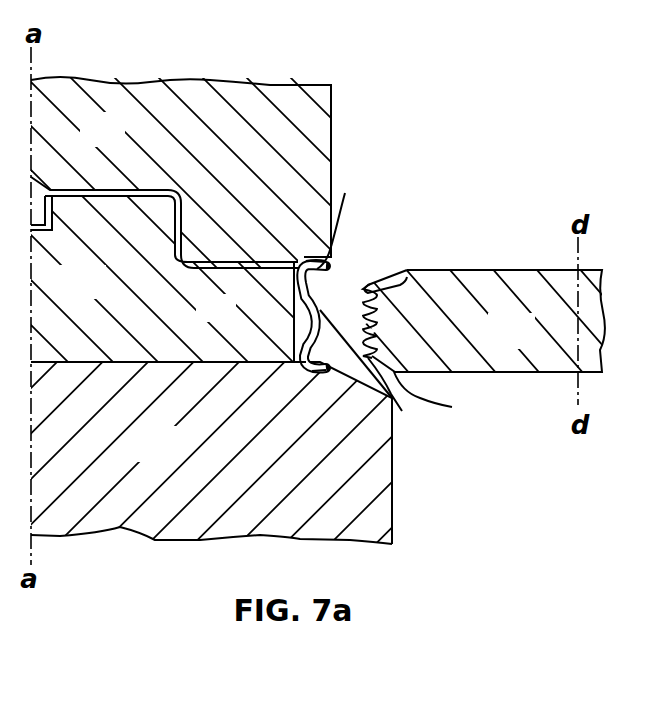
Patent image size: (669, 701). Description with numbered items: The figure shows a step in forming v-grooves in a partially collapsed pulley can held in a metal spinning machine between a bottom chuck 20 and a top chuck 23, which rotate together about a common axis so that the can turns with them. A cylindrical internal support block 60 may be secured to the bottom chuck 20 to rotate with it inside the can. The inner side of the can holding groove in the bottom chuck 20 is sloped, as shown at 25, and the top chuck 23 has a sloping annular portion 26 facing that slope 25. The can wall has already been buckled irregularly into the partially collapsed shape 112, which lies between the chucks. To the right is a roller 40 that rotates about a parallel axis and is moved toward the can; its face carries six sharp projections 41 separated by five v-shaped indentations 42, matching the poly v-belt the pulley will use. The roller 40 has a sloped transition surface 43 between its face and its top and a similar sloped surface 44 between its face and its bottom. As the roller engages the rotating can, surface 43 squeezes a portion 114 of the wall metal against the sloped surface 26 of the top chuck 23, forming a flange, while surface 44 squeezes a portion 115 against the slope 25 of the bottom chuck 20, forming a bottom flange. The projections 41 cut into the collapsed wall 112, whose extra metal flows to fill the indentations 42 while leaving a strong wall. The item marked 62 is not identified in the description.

The bottom chuck 20 is at (137, 459).
The top chuck 23 is at (120, 143).
The sloped inner side of groove 25 is at (299, 364).
The sloping annular portion 26 is at (306, 258).
The roller 40 is at (531, 346).
The sharp projections 41 is at (364, 289).
The v-shaped indentations 42 is at (408, 271).
The sloped transition surface (top) 43 is at (376, 282).
The sloped transition surface (bottom) 44 is at (443, 399).
The cylindrical internal support block 60 is at (65, 296).
The seal 62 is at (297, 316).
The buckled can wall 112 is at (383, 375).
The portion of metal (top flange) 114 is at (349, 217).
The portion of metal (bottom flange) 115 is at (323, 376).